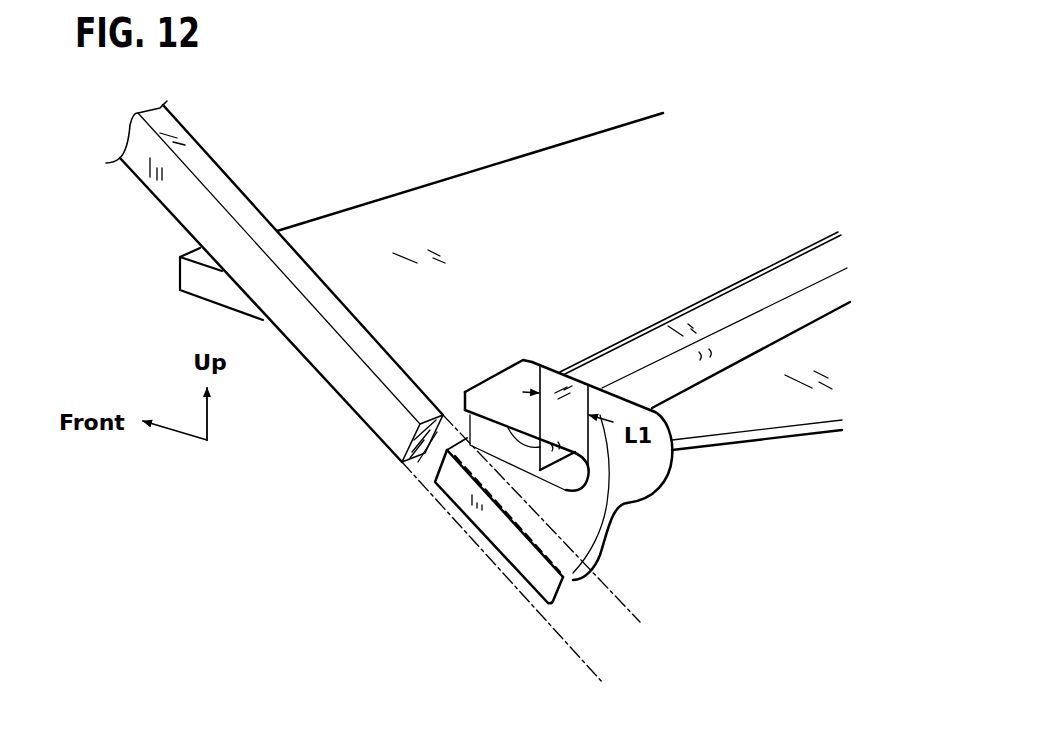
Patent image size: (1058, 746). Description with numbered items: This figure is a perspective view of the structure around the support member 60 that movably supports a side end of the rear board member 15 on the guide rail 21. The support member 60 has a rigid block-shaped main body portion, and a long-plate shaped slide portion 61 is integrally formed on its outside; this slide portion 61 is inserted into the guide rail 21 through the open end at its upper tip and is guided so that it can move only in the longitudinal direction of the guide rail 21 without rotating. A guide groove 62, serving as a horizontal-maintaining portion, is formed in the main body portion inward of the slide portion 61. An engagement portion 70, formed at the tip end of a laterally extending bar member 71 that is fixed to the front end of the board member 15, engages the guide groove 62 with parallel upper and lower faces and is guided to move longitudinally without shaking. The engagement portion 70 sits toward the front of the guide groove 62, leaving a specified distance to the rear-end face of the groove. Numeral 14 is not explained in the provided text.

The roof panel 14 is at (495, 185).
The guide rail 21 is at (218, 162).
The engagement portion 70 is at (503, 440).
The bar member 71 is at (753, 287).
The rear board member 15 is at (758, 410).
The support member 60 is at (642, 480).
The slide portion 61 is at (500, 542).
The guide groove 62 is at (565, 476).